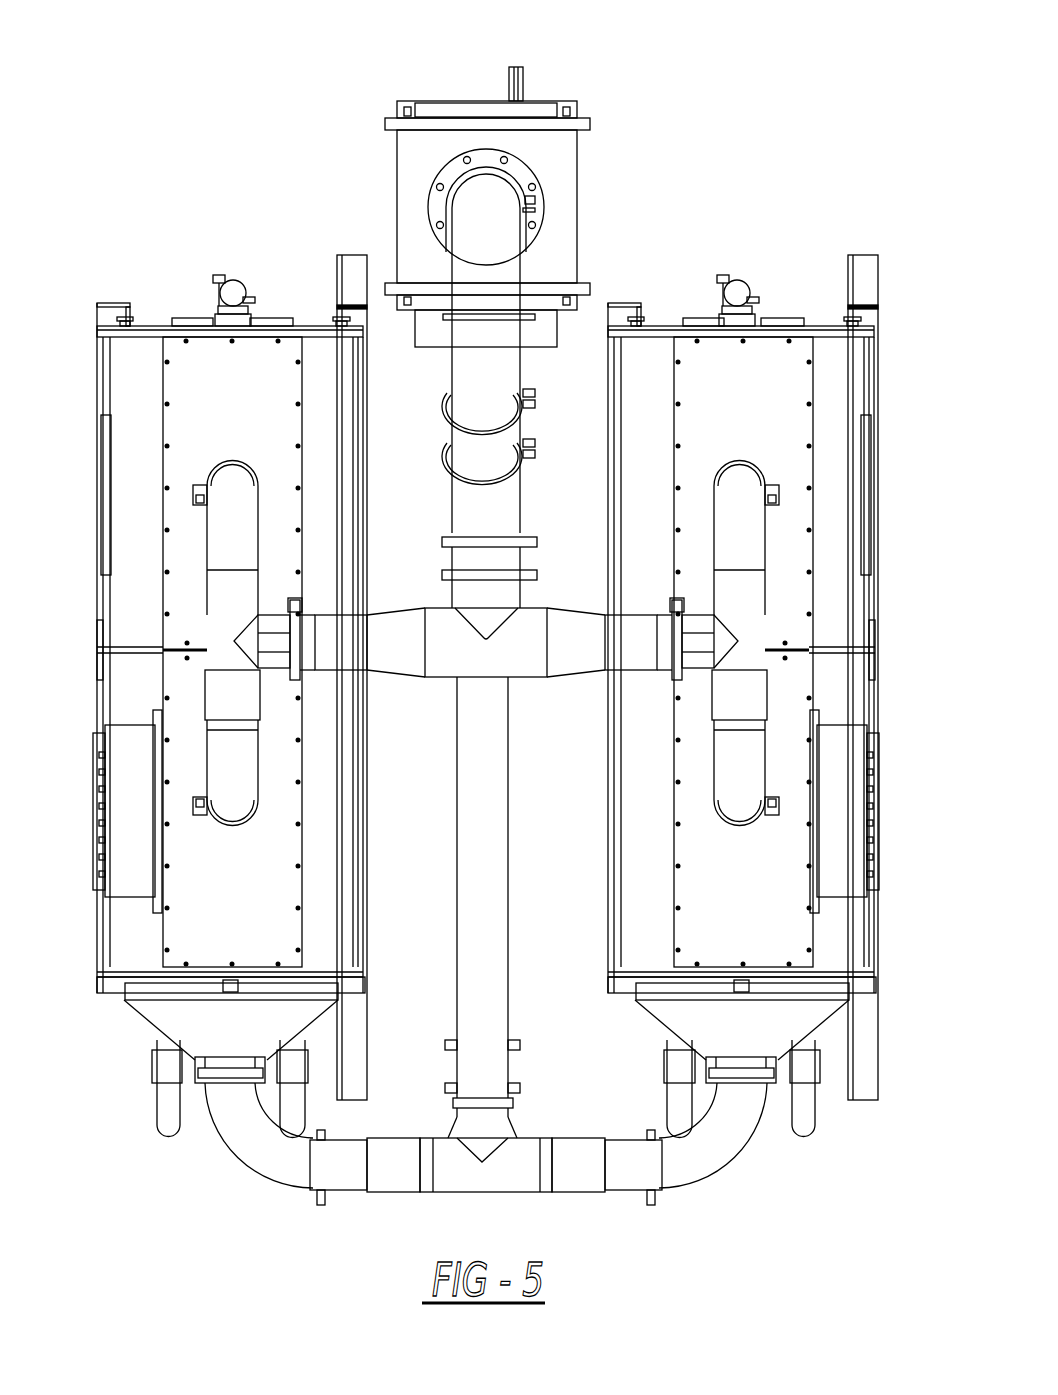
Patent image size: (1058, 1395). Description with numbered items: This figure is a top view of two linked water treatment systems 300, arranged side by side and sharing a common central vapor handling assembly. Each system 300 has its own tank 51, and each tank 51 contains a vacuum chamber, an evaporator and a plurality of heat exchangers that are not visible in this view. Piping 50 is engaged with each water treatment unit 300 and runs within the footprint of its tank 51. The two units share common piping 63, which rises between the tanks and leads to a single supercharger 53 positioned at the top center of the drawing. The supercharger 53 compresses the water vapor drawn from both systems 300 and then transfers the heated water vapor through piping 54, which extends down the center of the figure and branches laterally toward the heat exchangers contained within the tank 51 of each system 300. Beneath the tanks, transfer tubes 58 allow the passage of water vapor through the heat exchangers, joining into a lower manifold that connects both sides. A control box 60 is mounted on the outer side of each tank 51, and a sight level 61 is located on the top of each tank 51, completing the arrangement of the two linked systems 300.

The water treatment system 300 is at (124, 224).
The piping 50 is at (220, 543).
The tank 51 is at (102, 397).
The supercharger 53 is at (580, 188).
The piping 54 is at (512, 930).
The transfer tube 58 is at (155, 1132).
The control box 60 is at (881, 859).
The sight level 61 is at (240, 281).
The common piping 63 is at (462, 265).